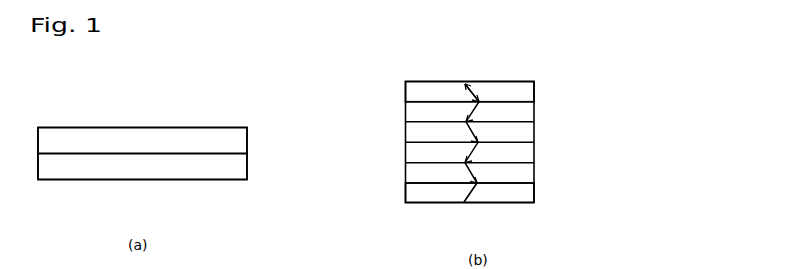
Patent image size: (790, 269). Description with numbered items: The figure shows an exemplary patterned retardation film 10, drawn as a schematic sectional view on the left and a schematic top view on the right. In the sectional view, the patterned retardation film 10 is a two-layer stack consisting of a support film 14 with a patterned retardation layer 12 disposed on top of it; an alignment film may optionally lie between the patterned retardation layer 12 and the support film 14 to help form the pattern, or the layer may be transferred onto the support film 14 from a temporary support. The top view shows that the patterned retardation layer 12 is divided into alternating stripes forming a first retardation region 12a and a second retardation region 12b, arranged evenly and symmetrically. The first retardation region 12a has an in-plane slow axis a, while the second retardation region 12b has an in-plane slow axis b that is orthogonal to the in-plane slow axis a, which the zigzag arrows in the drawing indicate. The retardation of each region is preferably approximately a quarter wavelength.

In FIG. 1a, the patterned retardation film 10 is at (174, 122).
In FIG. 1a, the patterned retardation layer 12 is at (248, 135).
In FIG. 1b, the patterned retardation layer 12 is at (393, 84).
In FIG. 1a, the support film 14 is at (248, 163).
In FIG. 1b, the first retardation region 12a is at (523, 195).
In FIG. 1b, the second retardation region 12b is at (522, 92).
In FIG. 1b, the in-plane slow axis a is at (473, 186).
In FIG. 1b, the in-plane slow axis b is at (479, 102).